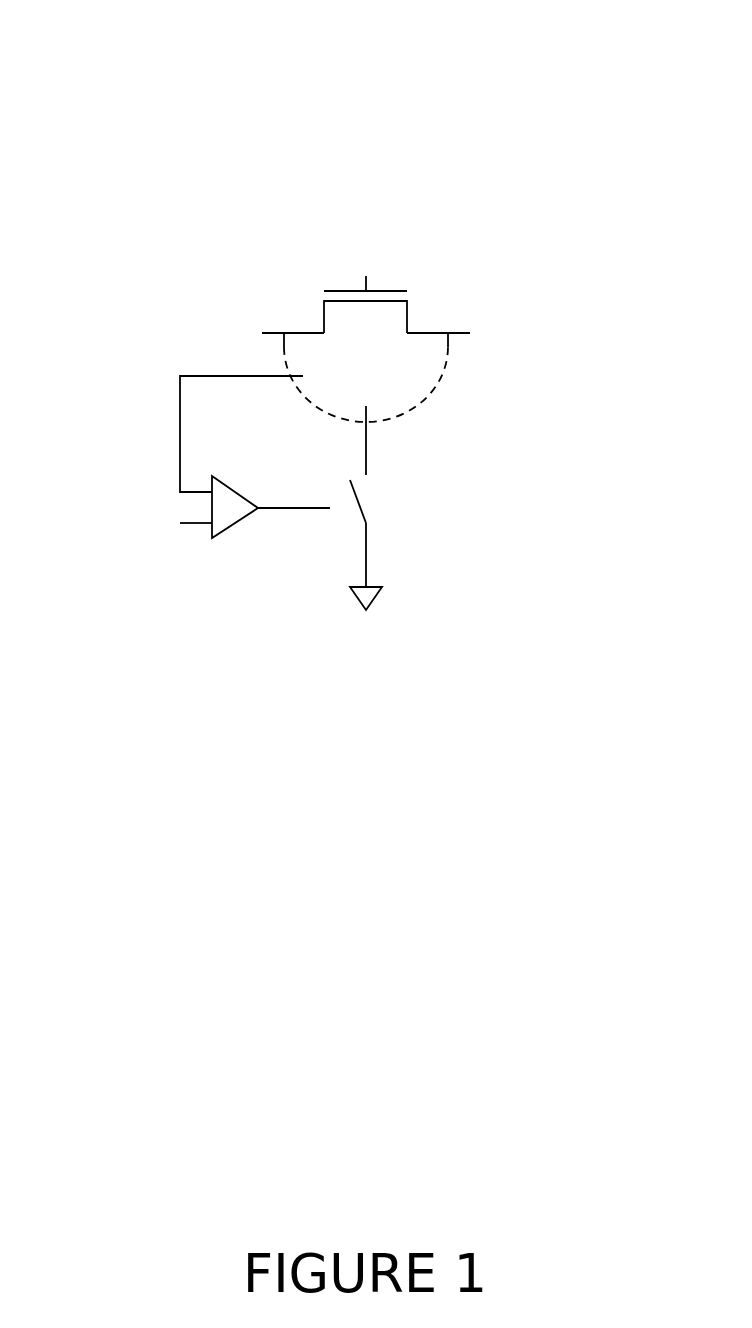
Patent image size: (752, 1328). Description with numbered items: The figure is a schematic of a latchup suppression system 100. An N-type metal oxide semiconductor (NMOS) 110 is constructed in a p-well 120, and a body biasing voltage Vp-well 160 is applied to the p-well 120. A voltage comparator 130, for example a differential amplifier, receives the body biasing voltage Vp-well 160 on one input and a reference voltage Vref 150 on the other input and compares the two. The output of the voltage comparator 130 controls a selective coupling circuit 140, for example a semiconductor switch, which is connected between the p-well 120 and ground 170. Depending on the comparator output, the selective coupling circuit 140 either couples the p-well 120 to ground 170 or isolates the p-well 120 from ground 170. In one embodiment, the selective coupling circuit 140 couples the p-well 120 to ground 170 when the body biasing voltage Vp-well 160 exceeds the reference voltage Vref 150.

The latchup suppression system 100 is at (72, 29).
The N-type metal oxide semiconductor (NMOS) 110 is at (395, 282).
The p-well 120 is at (418, 376).
The voltage comparator 130 is at (235, 488).
The selective coupling circuit 140 is at (377, 497).
The reference voltage Vref 150 is at (190, 527).
The body biasing voltage Vp-well 160 is at (232, 373).
The ground 170 is at (378, 597).